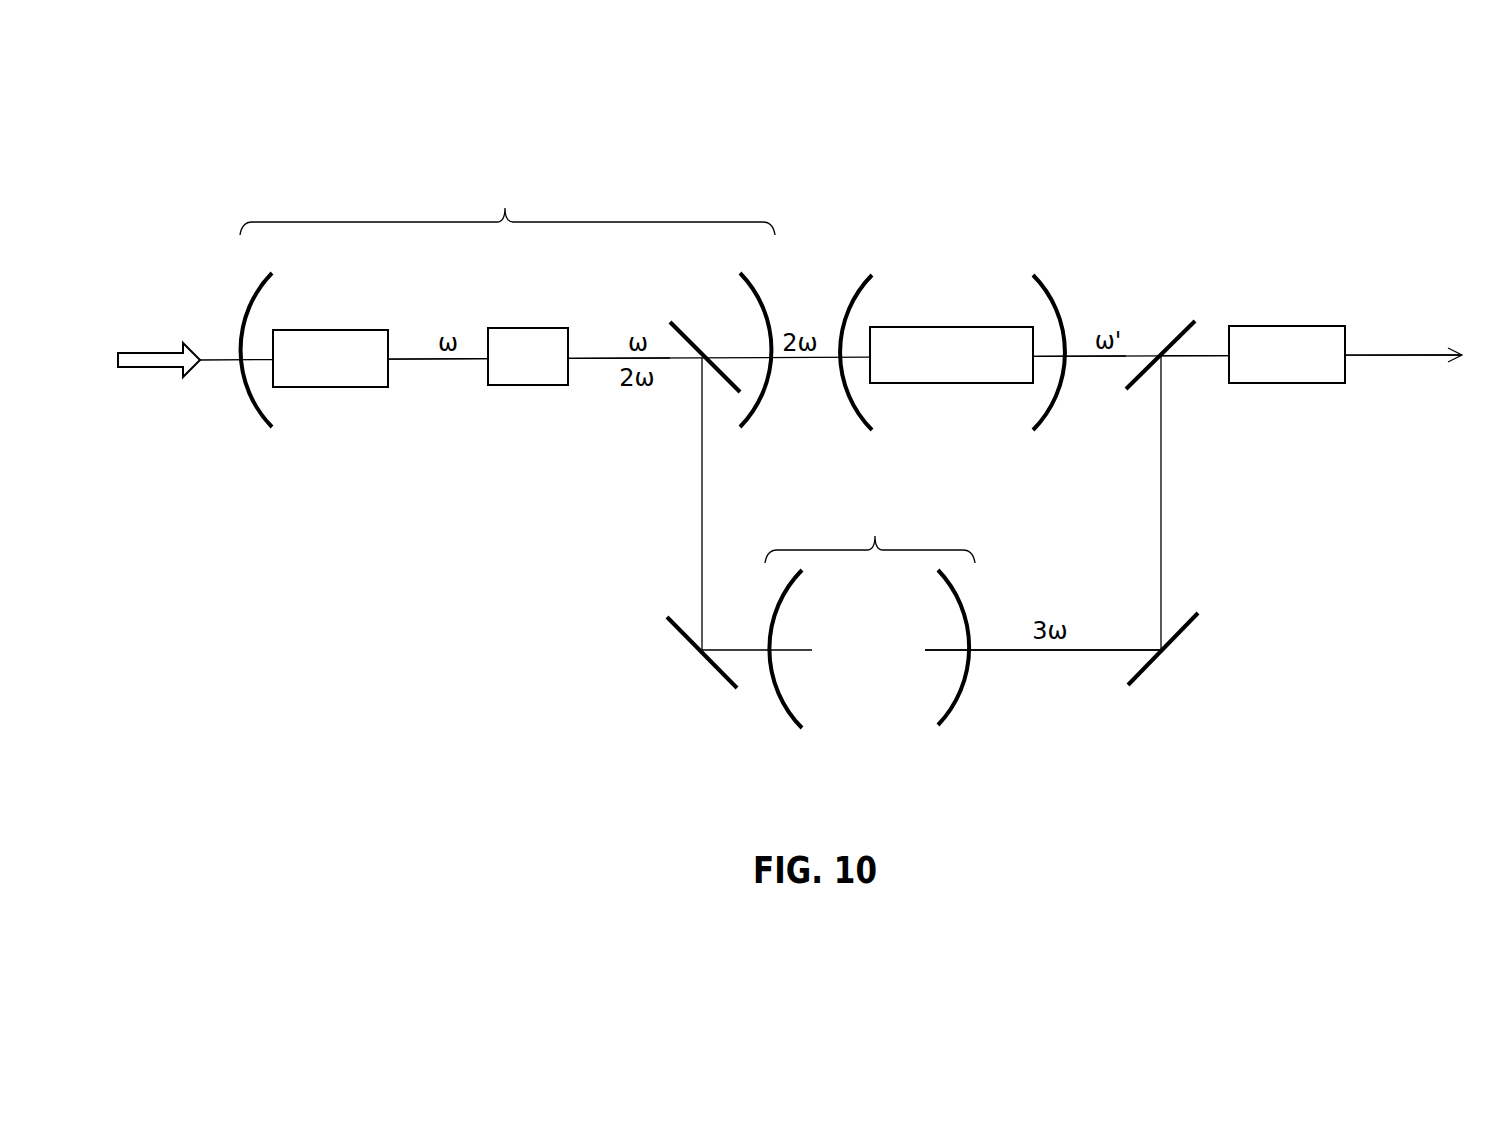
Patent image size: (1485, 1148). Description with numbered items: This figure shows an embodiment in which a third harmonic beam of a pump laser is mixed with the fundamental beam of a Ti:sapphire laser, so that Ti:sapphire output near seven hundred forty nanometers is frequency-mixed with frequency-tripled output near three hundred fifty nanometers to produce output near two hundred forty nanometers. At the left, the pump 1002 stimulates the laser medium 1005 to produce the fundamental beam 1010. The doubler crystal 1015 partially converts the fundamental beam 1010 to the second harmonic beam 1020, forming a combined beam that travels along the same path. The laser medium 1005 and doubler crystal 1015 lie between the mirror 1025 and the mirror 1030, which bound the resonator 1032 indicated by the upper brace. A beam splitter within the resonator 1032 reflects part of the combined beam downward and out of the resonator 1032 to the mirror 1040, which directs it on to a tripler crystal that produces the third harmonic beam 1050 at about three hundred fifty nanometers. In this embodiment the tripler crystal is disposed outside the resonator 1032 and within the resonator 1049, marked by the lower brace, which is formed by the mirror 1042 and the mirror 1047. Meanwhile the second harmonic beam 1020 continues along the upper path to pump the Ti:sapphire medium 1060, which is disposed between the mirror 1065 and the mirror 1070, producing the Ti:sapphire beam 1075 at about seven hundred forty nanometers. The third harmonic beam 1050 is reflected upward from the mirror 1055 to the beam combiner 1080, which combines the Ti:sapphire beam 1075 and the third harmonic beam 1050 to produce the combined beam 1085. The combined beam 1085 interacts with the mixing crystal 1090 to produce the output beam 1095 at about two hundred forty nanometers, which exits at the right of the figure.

The pump 1002 is at (150, 367).
The laser medium 1005 is at (338, 330).
The fundamental beam 1010 is at (425, 359).
The doubler crystal 1015 is at (532, 328).
The second harmonic beam 1020 is at (595, 359).
The mirror 1025 is at (258, 420).
The mirror 1030 is at (763, 405).
The resonator 1032 is at (548, 221).
The mirror 1040 is at (672, 633).
The mirror 1042 is at (780, 703).
The mirror 1047 is at (947, 717).
The resonator 1049 is at (920, 549).
The third harmonic beam 1050 is at (1075, 652).
The mirror 1055 is at (1183, 633).
The Ti:sapphire medium 1060 is at (912, 327).
The mirror 1065 is at (860, 410).
The mirror 1070 is at (1045, 418).
The Ti:sapphire beam 1075 is at (1085, 357).
The beam combiner 1080 is at (1175, 325).
The combined beam 1085 is at (1187, 358).
The mixing crystal 1090 is at (1303, 326).
The output beam 1095 is at (1408, 360).